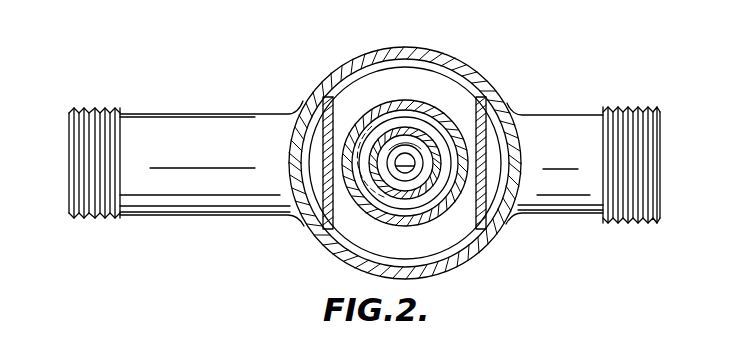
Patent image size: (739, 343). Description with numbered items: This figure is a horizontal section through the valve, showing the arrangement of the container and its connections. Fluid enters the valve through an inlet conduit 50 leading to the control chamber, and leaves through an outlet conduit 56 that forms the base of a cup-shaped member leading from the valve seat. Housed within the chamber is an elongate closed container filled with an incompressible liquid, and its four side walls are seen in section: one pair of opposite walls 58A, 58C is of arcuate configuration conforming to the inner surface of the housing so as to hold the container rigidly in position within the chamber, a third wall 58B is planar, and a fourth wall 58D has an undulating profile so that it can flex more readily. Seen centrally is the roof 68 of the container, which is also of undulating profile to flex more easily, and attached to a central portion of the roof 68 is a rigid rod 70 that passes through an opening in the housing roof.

The inlet conduit 50 is at (182, 132).
The outlet conduit 56 is at (582, 131).
The side wall 58A is at (427, 62).
The third wall 58B is at (486, 130).
The side wall 58C is at (470, 243).
The fourth wall 58D is at (325, 108).
The roof 68 is at (430, 136).
The rigid rod 70 is at (399, 172).